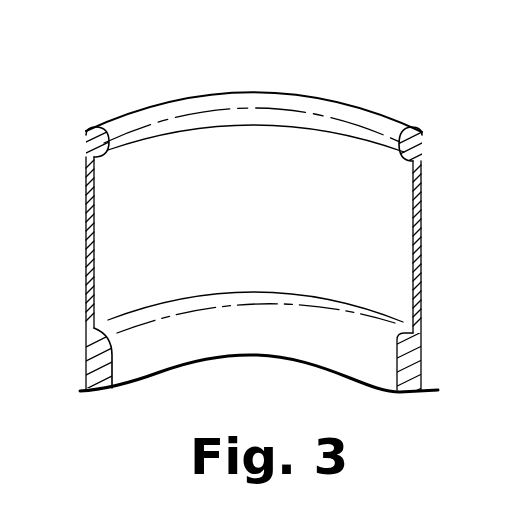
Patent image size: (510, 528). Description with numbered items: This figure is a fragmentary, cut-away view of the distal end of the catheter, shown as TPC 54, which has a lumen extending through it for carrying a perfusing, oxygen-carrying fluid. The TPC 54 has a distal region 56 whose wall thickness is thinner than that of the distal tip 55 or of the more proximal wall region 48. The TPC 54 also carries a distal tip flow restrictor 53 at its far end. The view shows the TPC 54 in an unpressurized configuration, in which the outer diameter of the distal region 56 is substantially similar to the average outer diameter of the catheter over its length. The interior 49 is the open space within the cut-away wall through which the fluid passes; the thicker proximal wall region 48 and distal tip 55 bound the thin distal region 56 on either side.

The proximal wall region 48 is at (113, 358).
The cylindrical body 49 is at (262, 212).
The distal tip flow restrictor 53 is at (113, 130).
The TPC 54 is at (327, 97).
The distal tip 55 is at (420, 132).
The distal region 56 is at (78, 131).